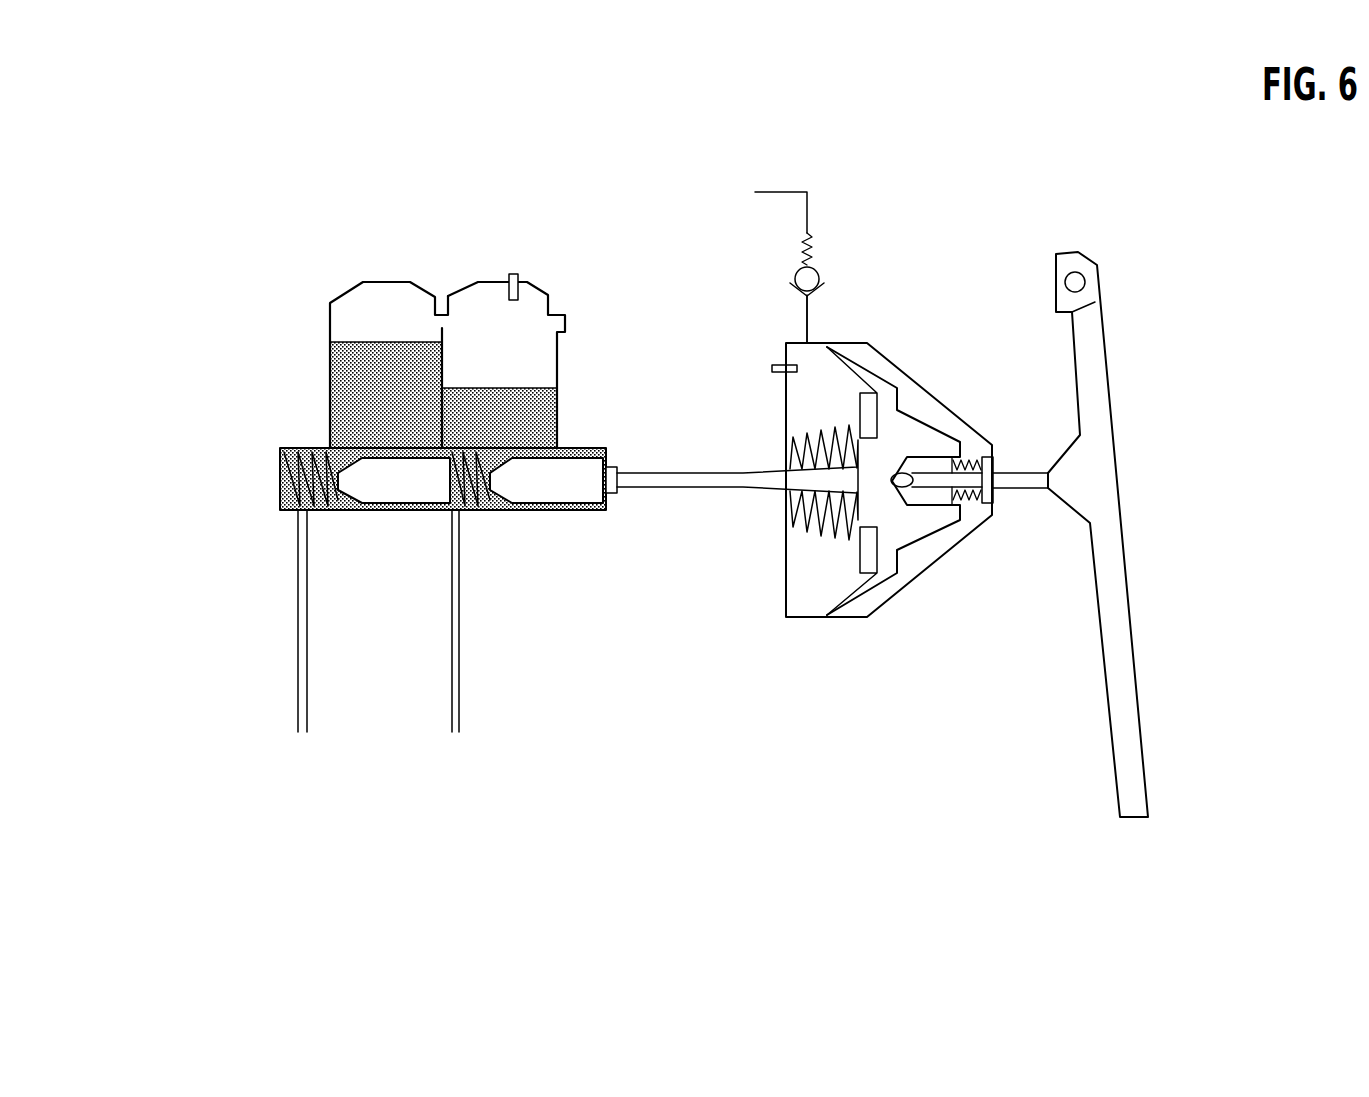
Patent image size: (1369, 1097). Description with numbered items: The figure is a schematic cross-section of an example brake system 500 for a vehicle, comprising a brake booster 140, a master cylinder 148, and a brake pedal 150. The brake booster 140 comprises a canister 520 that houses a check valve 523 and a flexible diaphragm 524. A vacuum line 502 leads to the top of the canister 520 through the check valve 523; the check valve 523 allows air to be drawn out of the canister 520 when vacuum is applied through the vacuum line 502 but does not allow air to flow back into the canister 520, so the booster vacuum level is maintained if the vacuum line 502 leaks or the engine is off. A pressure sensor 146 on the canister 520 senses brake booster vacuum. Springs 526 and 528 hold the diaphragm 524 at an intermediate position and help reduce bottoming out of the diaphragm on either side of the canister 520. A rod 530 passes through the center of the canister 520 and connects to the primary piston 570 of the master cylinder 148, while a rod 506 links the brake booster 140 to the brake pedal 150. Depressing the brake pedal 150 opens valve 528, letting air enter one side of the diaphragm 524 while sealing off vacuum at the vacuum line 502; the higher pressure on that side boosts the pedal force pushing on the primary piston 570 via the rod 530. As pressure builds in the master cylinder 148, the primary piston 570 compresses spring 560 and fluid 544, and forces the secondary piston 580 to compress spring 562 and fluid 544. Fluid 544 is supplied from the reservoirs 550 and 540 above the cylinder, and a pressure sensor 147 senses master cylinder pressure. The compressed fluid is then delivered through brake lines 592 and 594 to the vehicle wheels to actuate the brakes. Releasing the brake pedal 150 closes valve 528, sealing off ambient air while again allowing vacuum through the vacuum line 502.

The brake system 500 is at (152, 105).
The master cylinder 148 is at (392, 230).
The pressure sensor 147 is at (508, 278).
The first reservoir 550 is at (328, 303).
The second reservoir 540 is at (557, 360).
The fluid 544 is at (397, 403).
The secondary piston 580 is at (410, 490).
The primary piston 570 is at (570, 493).
The spring 562 is at (283, 487).
The spring 560 is at (482, 502).
The brake line 592 is at (298, 712).
The second brake line 594 is at (452, 708).
The rod 530 is at (722, 473).
The pressure sensor 146 is at (772, 363).
The flexible diaphragm 524 is at (878, 367).
The spring 526 is at (862, 427).
The spring 528 is at (993, 458).
The canister 520 is at (932, 568).
The brake booster 140 is at (929, 640).
The rod 506 is at (1022, 490).
The brake pedal 150 is at (1106, 383).
The vacuum line 502 is at (775, 190).
The check valve 523 is at (818, 282).